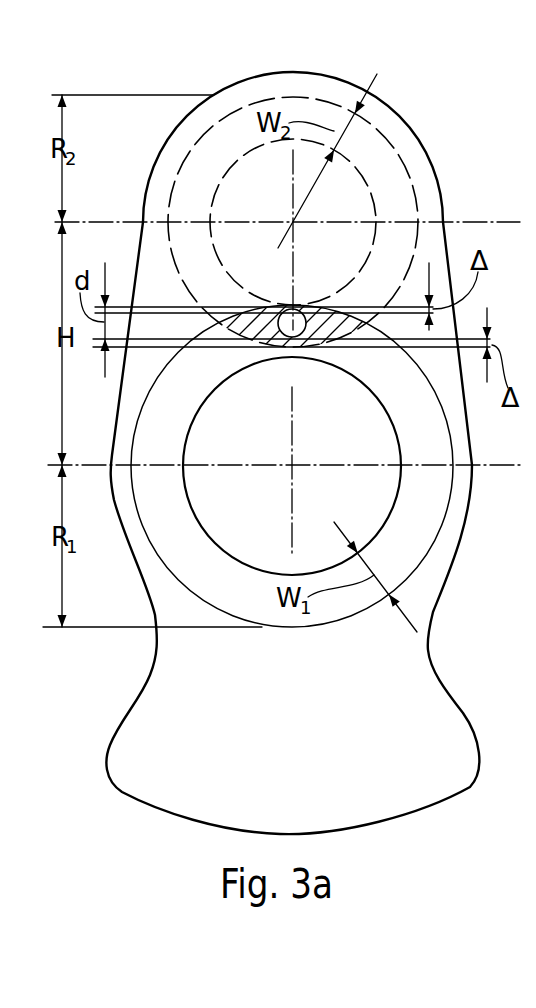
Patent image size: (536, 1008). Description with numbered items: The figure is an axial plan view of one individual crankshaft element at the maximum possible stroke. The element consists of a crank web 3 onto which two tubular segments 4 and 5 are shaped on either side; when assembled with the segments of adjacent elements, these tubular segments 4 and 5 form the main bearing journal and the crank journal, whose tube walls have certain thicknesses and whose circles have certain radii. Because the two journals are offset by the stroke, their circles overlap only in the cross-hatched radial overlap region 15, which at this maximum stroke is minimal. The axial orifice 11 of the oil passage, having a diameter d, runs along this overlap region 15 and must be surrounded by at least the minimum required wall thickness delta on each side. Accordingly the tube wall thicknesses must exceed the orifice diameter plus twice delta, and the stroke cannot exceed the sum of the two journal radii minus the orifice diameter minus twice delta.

The crank web 3 is at (392, 790).
The tubular segment 4 is at (417, 513).
The tubular segment 5 is at (392, 163).
The axial orifice 11 is at (295, 322).
The radial overlap region 15 is at (266, 324).